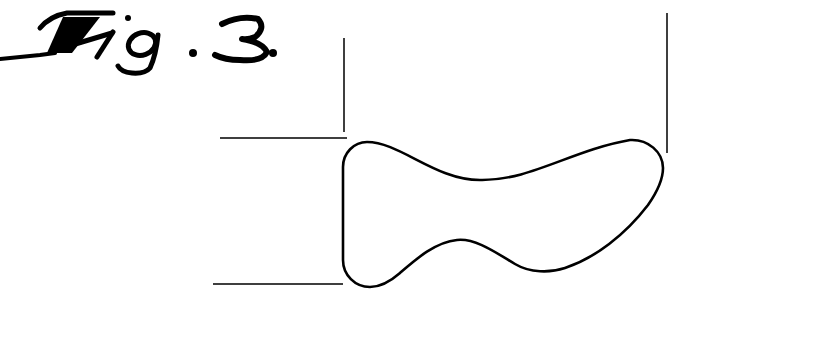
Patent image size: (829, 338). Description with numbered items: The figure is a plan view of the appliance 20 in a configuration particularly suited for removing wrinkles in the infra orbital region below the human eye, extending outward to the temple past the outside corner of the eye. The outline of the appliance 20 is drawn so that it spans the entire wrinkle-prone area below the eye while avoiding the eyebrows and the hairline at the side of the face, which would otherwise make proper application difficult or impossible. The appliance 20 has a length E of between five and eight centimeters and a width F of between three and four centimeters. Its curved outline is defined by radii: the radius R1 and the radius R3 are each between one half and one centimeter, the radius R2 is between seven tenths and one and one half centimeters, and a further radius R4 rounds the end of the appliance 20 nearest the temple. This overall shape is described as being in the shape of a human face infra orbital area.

The appliance 20 is at (650, 197).
The length E is at (667, 71).
The width F is at (256, 138).
The radius R1 is at (357, 150).
The radius R2 is at (398, 268).
The radius R3 is at (373, 255).
The right end radius R4 is at (655, 153).